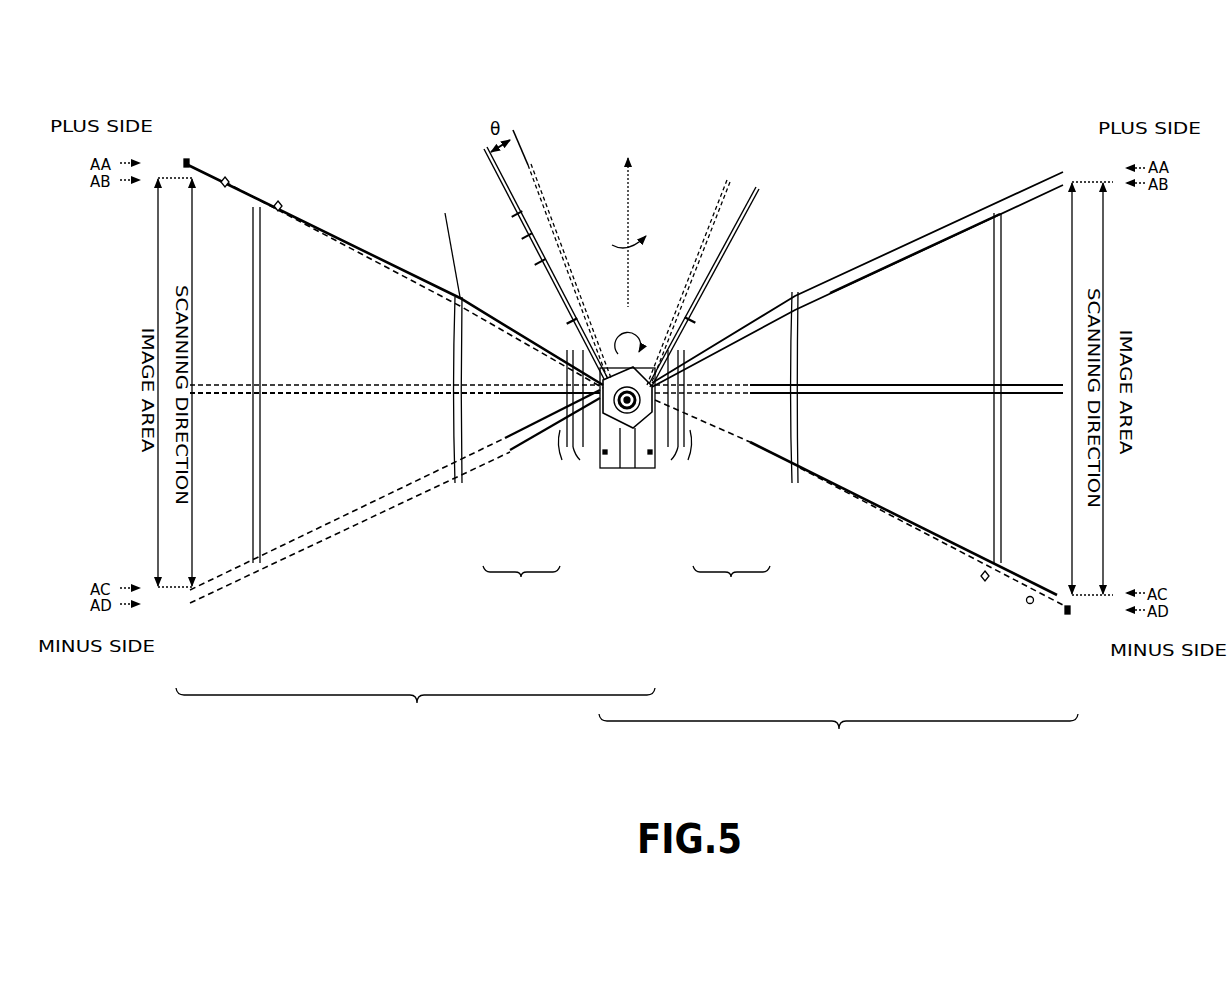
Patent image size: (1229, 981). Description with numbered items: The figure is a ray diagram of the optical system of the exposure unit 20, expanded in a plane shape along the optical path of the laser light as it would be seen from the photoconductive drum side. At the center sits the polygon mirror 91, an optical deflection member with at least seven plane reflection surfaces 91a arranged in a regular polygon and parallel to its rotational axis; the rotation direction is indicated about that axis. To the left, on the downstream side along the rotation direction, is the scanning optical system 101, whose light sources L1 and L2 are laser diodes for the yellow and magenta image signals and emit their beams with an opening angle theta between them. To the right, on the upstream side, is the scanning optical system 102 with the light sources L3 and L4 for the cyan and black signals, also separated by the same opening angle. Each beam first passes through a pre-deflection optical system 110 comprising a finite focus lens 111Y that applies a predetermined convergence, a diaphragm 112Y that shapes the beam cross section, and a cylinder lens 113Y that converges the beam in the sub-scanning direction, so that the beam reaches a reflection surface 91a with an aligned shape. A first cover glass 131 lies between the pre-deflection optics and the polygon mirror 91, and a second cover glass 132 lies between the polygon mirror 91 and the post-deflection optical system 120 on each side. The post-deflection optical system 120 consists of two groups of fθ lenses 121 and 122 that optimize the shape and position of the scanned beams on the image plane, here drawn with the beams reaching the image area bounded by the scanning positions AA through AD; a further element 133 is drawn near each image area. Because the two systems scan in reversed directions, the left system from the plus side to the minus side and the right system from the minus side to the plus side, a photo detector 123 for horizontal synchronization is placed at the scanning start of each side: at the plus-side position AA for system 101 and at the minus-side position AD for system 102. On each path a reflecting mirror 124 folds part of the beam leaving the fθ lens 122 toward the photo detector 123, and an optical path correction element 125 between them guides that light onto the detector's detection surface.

The exposure unit 20 is at (880, 96).
The polygon mirror main body 91 is at (640, 470).
The reflection surface 91a is at (622, 470).
The scanning optical system 101 is at (415, 709).
The scanning optical system 102 is at (838, 736).
The pre-deflection optical system 110 is at (439, 255).
The finite focus lens 111Y is at (514, 218).
The diaphragm 112Y is at (525, 238).
The cylinder lens 113Y is at (538, 265).
The post-deflection optical system 120 is at (626, 585).
The fθ lens 121 is at (572, 450).
The fθ lens 122 is at (462, 483).
The photo detector 123 is at (187, 157).
The reflecting mirror 124 is at (278, 200).
The optical path correction element 125 is at (224, 177).
The first cover glass 131 is at (566, 322).
The second cover glass 132 is at (572, 449).
The dust-proof glass 133 is at (262, 460).
The light source L1 is at (500, 184).
The light source L2 is at (530, 170).
The light source L3 is at (760, 190).
The light source L4 is at (724, 180).